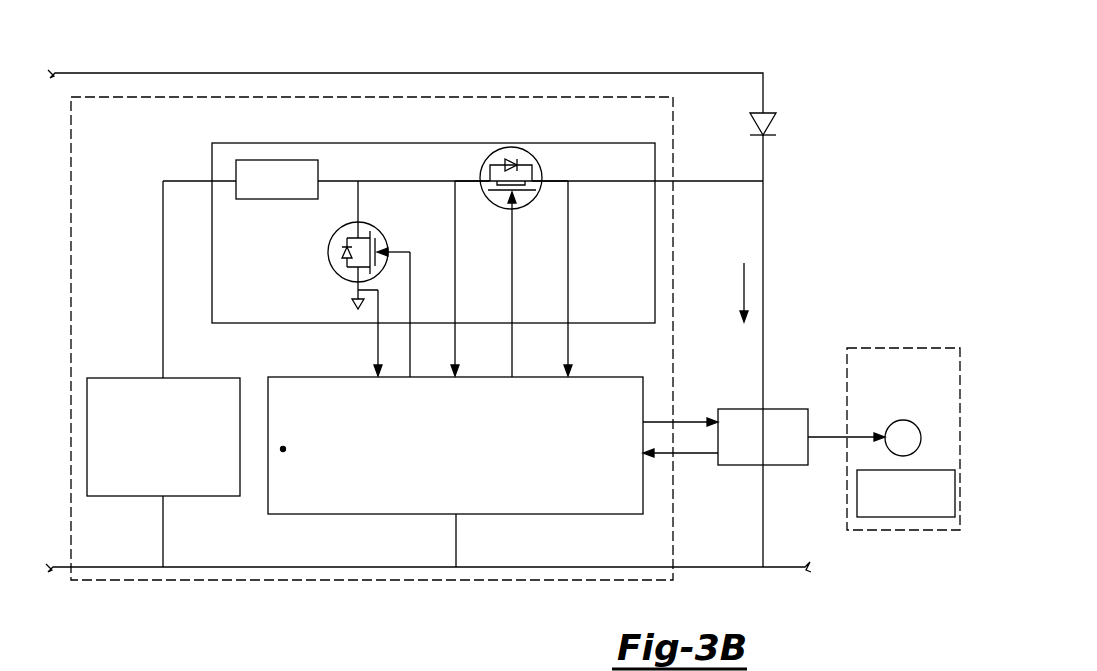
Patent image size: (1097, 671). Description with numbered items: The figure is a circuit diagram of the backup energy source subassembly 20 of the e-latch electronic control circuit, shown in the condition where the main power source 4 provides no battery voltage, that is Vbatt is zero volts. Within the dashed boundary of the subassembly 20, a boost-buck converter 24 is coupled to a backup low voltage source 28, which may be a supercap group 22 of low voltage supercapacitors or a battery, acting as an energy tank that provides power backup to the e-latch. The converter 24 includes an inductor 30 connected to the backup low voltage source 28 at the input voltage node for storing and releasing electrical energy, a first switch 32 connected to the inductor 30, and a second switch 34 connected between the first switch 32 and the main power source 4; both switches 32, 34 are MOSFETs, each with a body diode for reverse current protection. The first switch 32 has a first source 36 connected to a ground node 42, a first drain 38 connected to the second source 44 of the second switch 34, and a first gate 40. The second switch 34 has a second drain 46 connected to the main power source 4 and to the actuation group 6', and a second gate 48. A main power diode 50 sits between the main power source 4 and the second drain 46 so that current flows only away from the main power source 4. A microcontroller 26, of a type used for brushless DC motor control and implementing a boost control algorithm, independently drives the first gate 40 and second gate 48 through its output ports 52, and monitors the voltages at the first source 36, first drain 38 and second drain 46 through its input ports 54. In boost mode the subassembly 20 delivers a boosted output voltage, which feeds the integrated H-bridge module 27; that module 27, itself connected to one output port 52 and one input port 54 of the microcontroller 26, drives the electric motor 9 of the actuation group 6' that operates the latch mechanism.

The main power source 4 is at (210, 34).
The actuation group 6' is at (903, 485).
The electric motor 9 is at (885, 445).
The backup energy source subassembly 20 is at (262, 586).
The supercap group 22 is at (207, 496).
The boost-buck converter 24 is at (622, 137).
The microcontroller 26 is at (352, 516).
The integrated H-bridge module 27 is at (786, 409).
The backup low voltage source 28 is at (115, 370).
The inductor 30 is at (243, 160).
The first switch 32 is at (384, 224).
The second switch 34 is at (528, 133).
The first source 36 is at (352, 290).
The first drain 38 is at (345, 228).
The first gate 40 is at (398, 251).
The ground node 42 is at (250, 567).
The second source 44 is at (487, 168).
The second drain 46 is at (537, 168).
The second gate 48 is at (511, 250).
The main power diode 50 is at (773, 127).
The output ports 52 is at (409, 376).
The input ports 54 is at (376, 374).